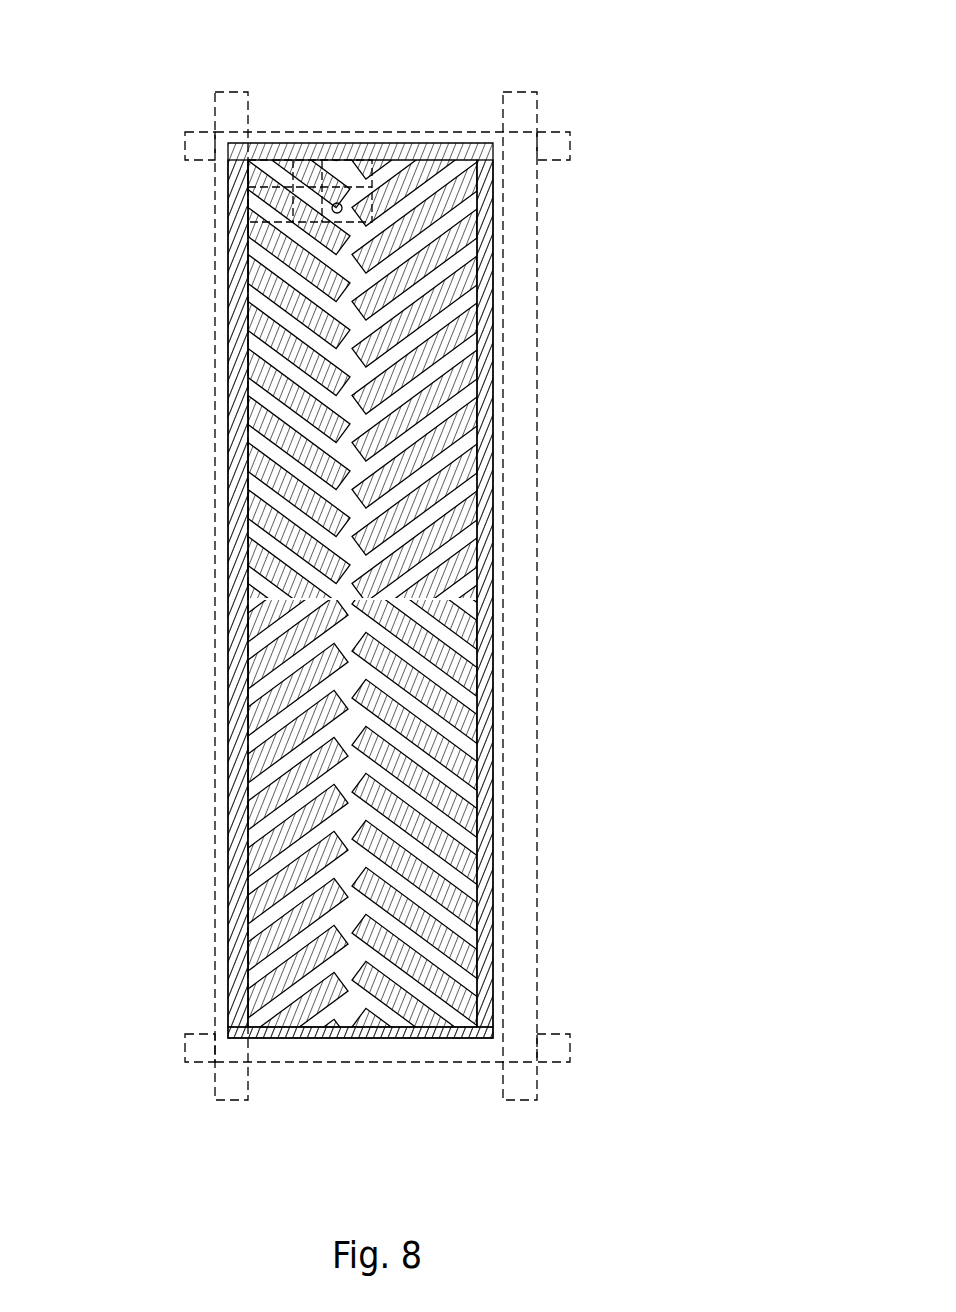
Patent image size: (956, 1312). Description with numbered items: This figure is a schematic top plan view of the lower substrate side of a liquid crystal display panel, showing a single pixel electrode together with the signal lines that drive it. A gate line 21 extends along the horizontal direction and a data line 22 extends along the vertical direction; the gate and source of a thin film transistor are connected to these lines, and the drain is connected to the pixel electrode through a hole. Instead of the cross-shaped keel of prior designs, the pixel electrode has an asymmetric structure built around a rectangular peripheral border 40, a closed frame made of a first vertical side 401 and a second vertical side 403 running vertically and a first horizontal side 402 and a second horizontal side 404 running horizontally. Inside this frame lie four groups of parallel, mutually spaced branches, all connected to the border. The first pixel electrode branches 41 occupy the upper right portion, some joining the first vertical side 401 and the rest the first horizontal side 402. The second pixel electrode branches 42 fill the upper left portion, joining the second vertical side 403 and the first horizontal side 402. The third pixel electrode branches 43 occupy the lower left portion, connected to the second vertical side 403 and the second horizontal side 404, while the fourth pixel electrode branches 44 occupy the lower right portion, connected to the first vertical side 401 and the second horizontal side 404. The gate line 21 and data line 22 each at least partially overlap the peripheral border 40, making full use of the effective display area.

The gate line 21 is at (197, 148).
The data line 22 is at (232, 108).
The peripheral border 40 is at (371, 603).
The first pixel electrode branches 41 is at (393, 330).
The second pixel electrode branches 42 is at (320, 300).
The third pixel electrode branches 43 is at (292, 830).
The fourth pixel electrode branches 44 is at (417, 817).
The first vertical side 401 is at (485, 595).
The first horizontal side 402 is at (360, 147).
The second vertical side 403 is at (242, 602).
The second horizontal side 404 is at (358, 1032).